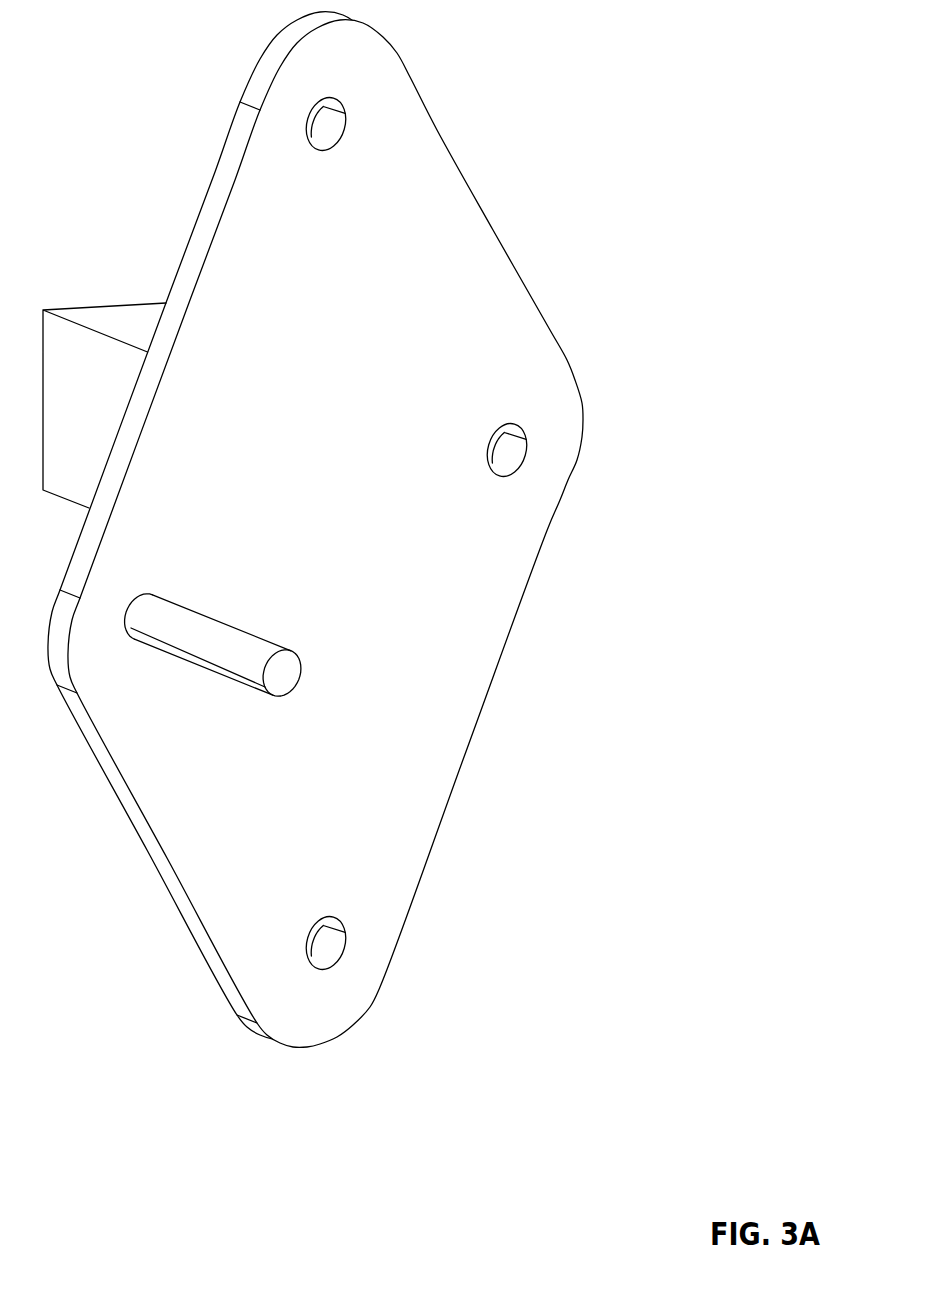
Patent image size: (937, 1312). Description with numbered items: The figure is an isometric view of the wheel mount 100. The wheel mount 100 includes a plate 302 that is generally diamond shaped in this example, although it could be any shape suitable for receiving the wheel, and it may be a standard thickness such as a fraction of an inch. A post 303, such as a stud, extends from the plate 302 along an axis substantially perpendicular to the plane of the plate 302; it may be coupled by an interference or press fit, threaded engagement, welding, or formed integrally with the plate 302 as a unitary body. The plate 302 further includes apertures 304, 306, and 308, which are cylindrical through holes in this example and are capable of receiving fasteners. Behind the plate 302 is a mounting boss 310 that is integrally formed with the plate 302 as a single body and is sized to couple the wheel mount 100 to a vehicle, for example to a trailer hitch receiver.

The wheel mount 100 is at (163, 55).
The plate 302 is at (473, 188).
The post 303 is at (252, 630).
The aperture 304 is at (317, 150).
The aperture 306 is at (328, 918).
The aperture 308 is at (508, 423).
The mounting boss 310 is at (137, 303).